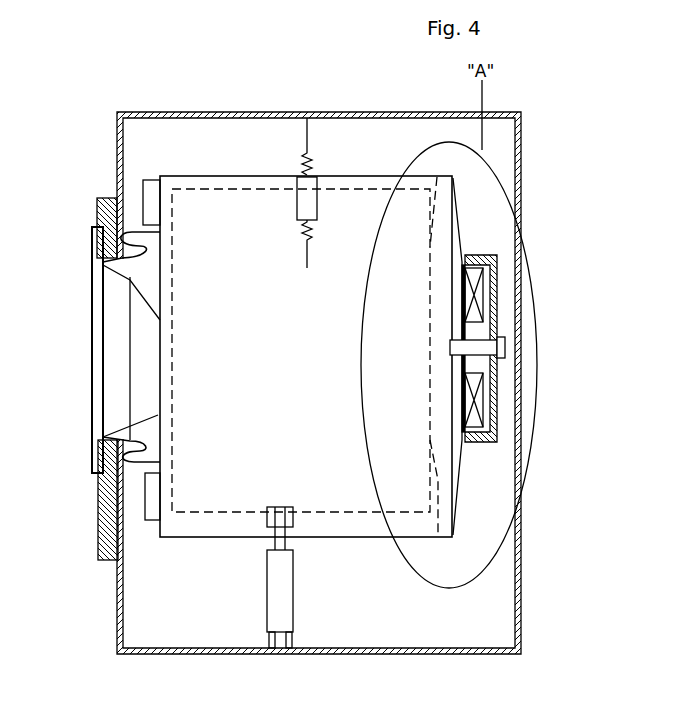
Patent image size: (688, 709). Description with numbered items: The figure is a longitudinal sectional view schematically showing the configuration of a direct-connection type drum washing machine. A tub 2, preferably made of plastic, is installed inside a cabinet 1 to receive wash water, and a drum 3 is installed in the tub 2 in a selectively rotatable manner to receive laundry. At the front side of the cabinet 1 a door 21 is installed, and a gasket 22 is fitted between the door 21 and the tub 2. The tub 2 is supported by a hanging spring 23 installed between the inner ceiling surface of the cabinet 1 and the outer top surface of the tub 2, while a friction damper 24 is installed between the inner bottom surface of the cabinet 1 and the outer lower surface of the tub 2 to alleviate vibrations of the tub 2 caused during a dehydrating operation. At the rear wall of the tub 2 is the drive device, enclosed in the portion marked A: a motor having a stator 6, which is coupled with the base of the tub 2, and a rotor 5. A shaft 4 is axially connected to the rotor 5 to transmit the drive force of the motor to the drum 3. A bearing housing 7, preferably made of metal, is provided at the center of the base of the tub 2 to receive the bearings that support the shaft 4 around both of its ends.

The cabinet 1 is at (175, 112).
The tub 2 is at (382, 173).
The drum 3 is at (238, 190).
The shaft 4 is at (477, 348).
The rotor 5 is at (493, 403).
The stator 6 is at (477, 293).
The bearing housing 7 is at (462, 393).
The door 21 is at (95, 358).
The gasket 22 is at (138, 467).
The hanging spring 23 is at (308, 153).
The friction damper 24 is at (285, 595).